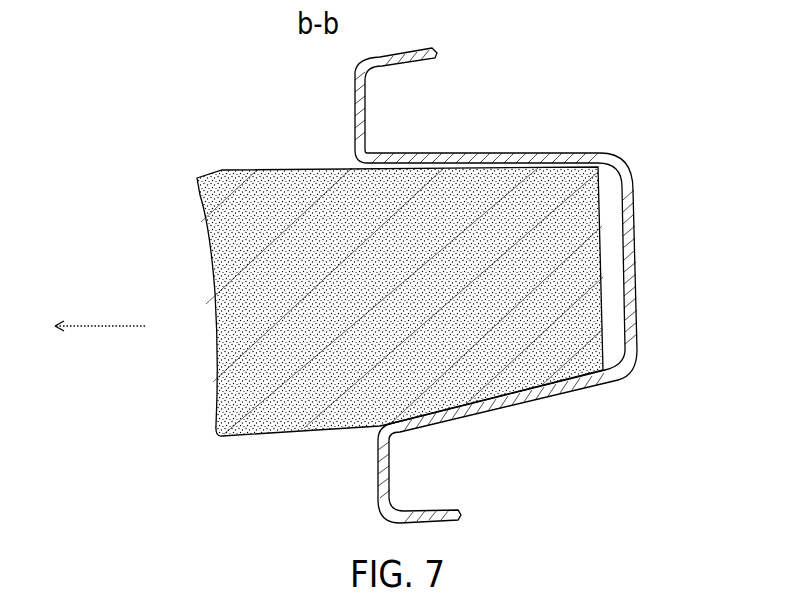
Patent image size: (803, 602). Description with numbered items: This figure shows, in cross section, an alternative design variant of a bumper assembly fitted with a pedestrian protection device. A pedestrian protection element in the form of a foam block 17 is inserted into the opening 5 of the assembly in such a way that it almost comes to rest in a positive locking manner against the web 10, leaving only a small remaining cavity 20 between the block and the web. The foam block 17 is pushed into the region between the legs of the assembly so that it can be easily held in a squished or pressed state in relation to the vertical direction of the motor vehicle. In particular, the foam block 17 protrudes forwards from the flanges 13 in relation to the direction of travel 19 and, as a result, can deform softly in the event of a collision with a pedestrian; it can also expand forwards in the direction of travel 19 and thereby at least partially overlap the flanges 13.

The opening 5 is at (420, 328).
The web 10 is at (637, 280).
The flanges 13 is at (363, 118).
The foam block 17 is at (490, 208).
The direction of travel 19 is at (107, 327).
The remaining cavity 20 is at (610, 222).